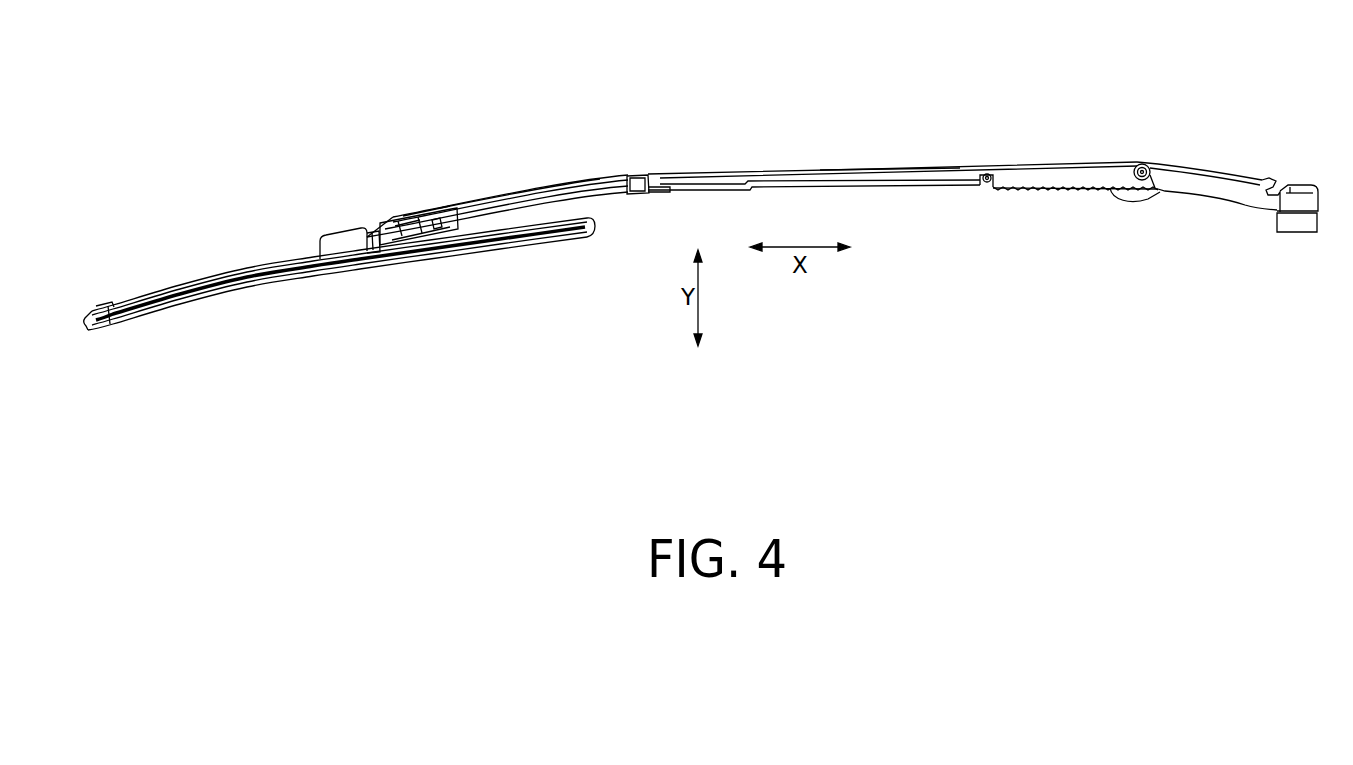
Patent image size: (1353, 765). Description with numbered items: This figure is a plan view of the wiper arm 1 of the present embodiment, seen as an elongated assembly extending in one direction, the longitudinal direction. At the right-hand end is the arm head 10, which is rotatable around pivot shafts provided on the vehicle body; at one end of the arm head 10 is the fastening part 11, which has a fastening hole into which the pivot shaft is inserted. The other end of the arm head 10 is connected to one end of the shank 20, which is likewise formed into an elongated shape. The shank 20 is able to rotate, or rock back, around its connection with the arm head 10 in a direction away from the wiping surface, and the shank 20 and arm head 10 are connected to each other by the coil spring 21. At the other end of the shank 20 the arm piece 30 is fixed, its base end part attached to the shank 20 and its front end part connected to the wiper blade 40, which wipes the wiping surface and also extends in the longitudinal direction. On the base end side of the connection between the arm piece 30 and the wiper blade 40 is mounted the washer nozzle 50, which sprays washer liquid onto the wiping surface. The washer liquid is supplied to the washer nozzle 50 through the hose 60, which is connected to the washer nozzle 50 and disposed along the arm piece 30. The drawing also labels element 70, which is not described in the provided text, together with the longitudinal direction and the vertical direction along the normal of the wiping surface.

The wiper arm 1 is at (900, 128).
The arm head 10 is at (1213, 170).
The fastening part 11 is at (1297, 233).
The shank 20 is at (960, 163).
The coil spring 21 is at (1052, 193).
The arm piece 30 is at (603, 176).
The wiper blade 40 is at (255, 265).
The washer nozzle 50 is at (432, 212).
The hose 60 is at (667, 194).
The hook 70 is at (1264, 180).